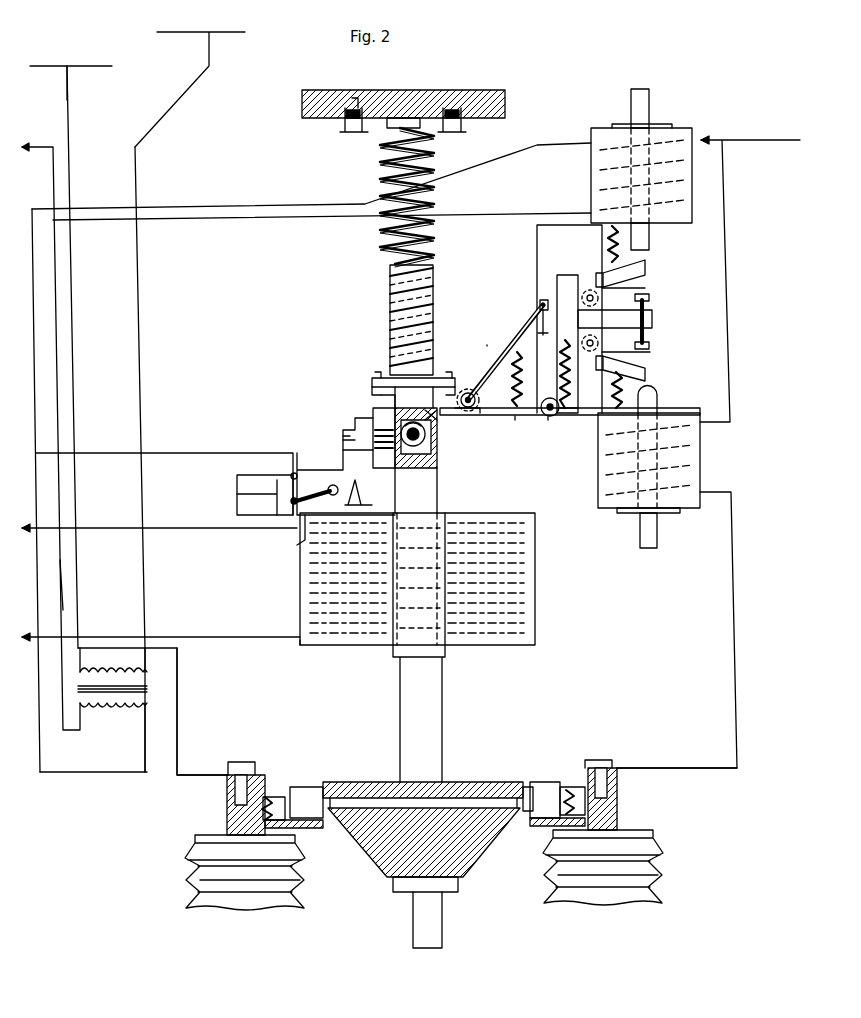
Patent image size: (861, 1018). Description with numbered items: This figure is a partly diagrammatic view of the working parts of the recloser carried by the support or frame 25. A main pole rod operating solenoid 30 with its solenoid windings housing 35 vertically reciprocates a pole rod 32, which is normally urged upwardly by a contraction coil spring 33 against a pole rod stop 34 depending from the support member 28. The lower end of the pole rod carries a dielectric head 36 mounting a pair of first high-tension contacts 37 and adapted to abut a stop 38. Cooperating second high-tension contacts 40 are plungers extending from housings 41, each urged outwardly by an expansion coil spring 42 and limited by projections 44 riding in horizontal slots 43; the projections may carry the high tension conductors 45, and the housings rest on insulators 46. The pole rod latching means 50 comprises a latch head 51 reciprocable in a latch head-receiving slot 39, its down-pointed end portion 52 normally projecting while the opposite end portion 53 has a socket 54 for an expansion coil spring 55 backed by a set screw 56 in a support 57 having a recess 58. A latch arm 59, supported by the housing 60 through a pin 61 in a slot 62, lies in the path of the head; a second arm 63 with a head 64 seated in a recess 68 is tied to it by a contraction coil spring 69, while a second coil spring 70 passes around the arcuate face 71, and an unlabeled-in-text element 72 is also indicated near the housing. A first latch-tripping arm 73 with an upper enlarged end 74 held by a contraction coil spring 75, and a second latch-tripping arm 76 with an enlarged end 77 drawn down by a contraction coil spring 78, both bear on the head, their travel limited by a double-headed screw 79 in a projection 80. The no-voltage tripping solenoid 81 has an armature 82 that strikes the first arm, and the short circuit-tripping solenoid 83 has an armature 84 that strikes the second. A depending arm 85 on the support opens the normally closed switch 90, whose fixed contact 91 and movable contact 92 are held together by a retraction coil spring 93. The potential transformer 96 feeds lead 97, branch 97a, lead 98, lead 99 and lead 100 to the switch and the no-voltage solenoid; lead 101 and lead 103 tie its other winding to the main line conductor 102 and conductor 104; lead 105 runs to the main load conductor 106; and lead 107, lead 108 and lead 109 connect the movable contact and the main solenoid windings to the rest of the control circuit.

The support or frame 25 is at (292, 84).
The support member 28 is at (505, 99).
The main pole rod operating solenoid 30 is at (343, 648).
The pole rod 32 is at (435, 313).
The contraction coil spring 33 is at (375, 161).
The pole rod stop 34 is at (428, 128).
The solenoid windings housing 35 is at (535, 621).
The head 36 is at (380, 877).
The first high-tension contacts 37 is at (338, 840).
The stop 38 is at (456, 892).
The latch head-receiving slot 39 is at (440, 440).
The second high-tension contacts 40 is at (312, 786).
The housings 41 is at (300, 830).
The expansion coil spring 42 is at (227, 808).
The horizontal slots 43 is at (278, 785).
The projections 44 is at (300, 786).
The high tension conductors 45 is at (178, 738).
The insulators 46 is at (185, 870).
The pole rod latching means 50 is at (486, 340).
The latch head 51 is at (438, 455).
The down-pointed end portion 52 is at (440, 424).
The opposite end portion 53 is at (373, 420).
The socket 54 is at (370, 432).
The expansion coil spring 55 is at (343, 445).
The set screw 56 is at (343, 436).
The support 57 is at (370, 408).
The opening or recess 58 is at (385, 408).
The latch arm 59 is at (516, 418).
The housing or support 60 is at (537, 244).
The pin or projection 61 is at (572, 420).
The slot 62 is at (572, 418).
The second arm 63 is at (538, 334).
The head 64 is at (542, 300).
The recess 68 is at (526, 375).
The contraction coil spring 69 is at (512, 375).
The second coil spring 70 is at (548, 417).
The arcuate face 71 is at (552, 420).
The pin 72 is at (535, 420).
The first latch-tripping arm 73 is at (647, 291).
The upper enlarged end 74 is at (650, 268).
The contraction coil spring 75 is at (645, 244).
The second latch-tripping arm 76 is at (650, 352).
The enlarged end 77 is at (648, 372).
The contraction coil spring 78 is at (650, 386).
The double-headed screw 79 is at (652, 338).
The horizontally-extending projection 80 is at (655, 318).
The no-voltage tripping solenoid 81 is at (690, 205).
The armature 82 is at (650, 110).
The high-tension short circuit-tripping solenoid 83 is at (700, 466).
The armature 84 is at (662, 400).
The horizontally-depending arm 85 is at (310, 470).
The switch 90 is at (234, 497).
The fixed contact 91 is at (292, 476).
The movable contact 92 is at (297, 518).
The retraction coil spring 93 is at (354, 488).
The potential transformer 96 is at (119, 712).
The lead 97 is at (36, 410).
The branch 97a is at (174, 452).
The lead 98 is at (65, 588).
The lead 99 is at (230, 221).
The lead 100 is at (215, 208).
The lead 101 is at (70, 121).
The main line conductor 102 is at (92, 64).
The lead 103 is at (150, 128).
The conductor 104 is at (180, 32).
The lead 105 is at (730, 356).
The main load conductor 106 is at (762, 140).
The lead 107 is at (201, 530).
The lead 108 is at (297, 545).
The lead 109 is at (272, 640).